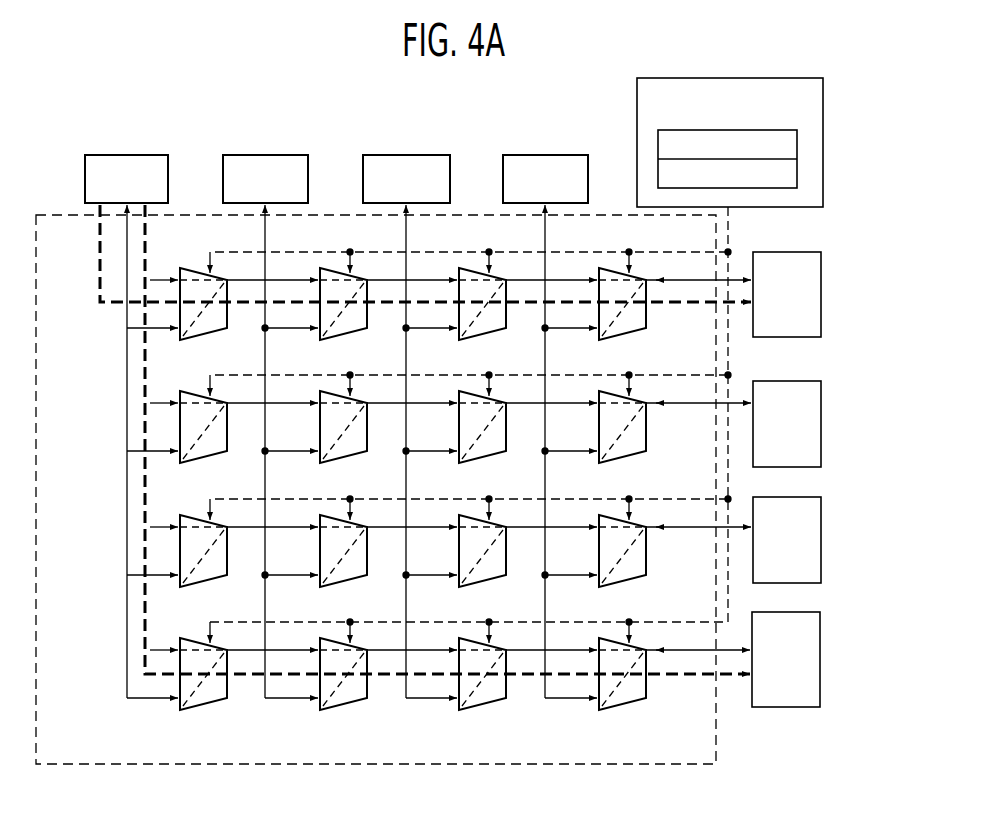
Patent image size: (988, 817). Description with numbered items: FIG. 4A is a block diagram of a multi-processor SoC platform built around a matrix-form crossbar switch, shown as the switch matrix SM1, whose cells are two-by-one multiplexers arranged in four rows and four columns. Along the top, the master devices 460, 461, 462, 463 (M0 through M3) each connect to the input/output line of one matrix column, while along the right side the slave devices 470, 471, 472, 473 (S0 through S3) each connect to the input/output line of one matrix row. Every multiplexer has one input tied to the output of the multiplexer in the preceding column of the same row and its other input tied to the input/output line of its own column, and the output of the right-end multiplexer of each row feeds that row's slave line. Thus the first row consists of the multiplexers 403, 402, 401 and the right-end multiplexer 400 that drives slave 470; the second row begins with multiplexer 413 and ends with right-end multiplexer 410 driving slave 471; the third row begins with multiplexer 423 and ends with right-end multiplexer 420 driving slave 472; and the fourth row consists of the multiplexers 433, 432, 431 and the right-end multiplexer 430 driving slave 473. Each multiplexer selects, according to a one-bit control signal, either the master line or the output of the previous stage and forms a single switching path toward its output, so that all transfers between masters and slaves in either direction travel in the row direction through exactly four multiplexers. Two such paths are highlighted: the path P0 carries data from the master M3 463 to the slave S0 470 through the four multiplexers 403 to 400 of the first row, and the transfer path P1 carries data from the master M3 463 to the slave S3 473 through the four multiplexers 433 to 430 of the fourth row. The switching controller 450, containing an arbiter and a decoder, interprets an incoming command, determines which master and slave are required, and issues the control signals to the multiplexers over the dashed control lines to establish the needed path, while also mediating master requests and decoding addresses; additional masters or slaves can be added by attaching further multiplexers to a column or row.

The 2×1 multiplexer 400 is at (601, 268).
The 2×1 multiplexer 401 is at (461, 268).
The 2×1 multiplexer 402 is at (322, 268).
The 2×1 multiplexer 403 is at (182, 268).
The 2×1 multiplexer 410 is at (646, 426).
The 2×1 multiplexer 413 is at (180, 430).
The 2×1 multiplexer 420 is at (646, 550).
The 2×1 multiplexer 423 is at (180, 554).
The 2×1 multiplexer 430 is at (620, 709).
The 2×1 multiplexer 431 is at (480, 709).
The 2×1 multiplexer 432 is at (340, 709).
The 2×1 multiplexer 433 is at (180, 678).
The switching controller 450 is at (823, 100).
The master device 460 is at (545, 155).
The master device 461 is at (406, 155).
The master device 462 is at (265, 155).
The master device 463 is at (127, 155).
The slave device 470 is at (821, 292).
The slave device 471 is at (821, 410).
The slave device 472 is at (821, 525).
The slave device 473 is at (820, 635).
The path P0 is at (100, 288).
The transfer path P1 is at (147, 243).
The switch matrix SM1 is at (375, 764).